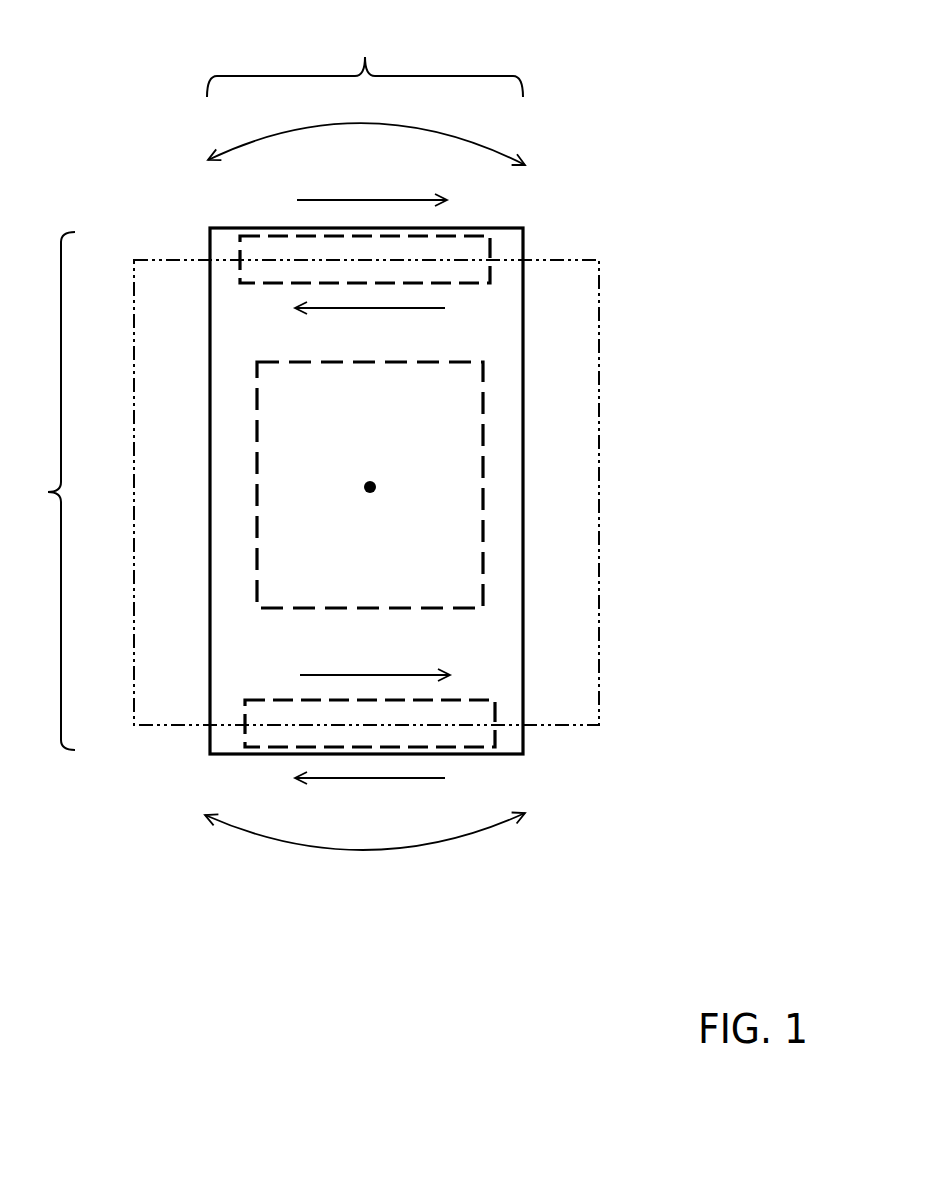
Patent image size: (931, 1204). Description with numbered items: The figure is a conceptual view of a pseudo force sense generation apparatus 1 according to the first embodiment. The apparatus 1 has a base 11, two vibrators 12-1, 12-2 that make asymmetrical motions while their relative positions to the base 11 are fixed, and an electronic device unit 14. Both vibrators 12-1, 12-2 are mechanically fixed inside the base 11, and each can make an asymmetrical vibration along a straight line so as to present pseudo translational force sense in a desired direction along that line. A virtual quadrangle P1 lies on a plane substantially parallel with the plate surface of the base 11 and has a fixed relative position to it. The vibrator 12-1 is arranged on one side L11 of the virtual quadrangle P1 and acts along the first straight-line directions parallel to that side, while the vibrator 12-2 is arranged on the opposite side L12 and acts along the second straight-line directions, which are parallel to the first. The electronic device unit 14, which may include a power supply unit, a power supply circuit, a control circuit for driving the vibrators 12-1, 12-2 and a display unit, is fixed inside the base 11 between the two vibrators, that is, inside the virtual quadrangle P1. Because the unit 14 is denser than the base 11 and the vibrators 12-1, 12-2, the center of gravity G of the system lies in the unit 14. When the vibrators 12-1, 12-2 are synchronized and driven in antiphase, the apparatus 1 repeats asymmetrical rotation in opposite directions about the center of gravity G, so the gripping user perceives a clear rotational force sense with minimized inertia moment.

The pseudo force sense generation apparatus 1 is at (662, 212).
The base 11 is at (210, 580).
The vibrator 12-1 is at (257, 274).
The vibrator 12-2 is at (472, 712).
The electronic device unit 14 is at (458, 460).
The center of gravity G is at (369, 472).
The virtual quadrangle P1 is at (366, 492).
The side L11 is at (166, 244).
The side L12 is at (164, 746).